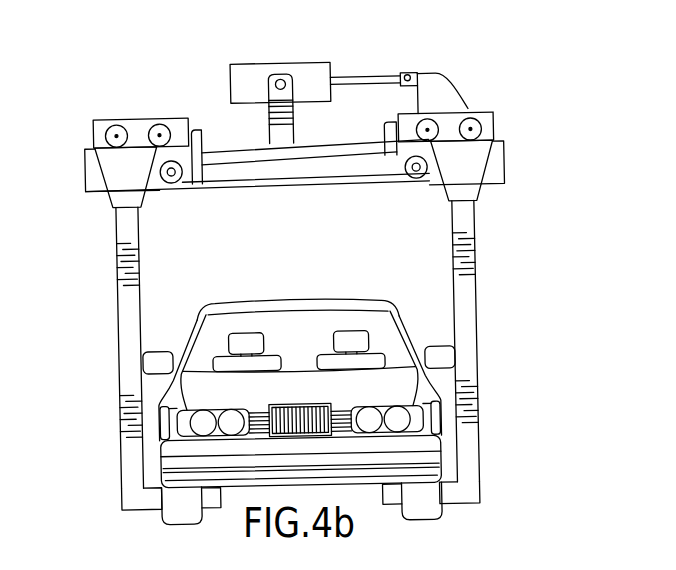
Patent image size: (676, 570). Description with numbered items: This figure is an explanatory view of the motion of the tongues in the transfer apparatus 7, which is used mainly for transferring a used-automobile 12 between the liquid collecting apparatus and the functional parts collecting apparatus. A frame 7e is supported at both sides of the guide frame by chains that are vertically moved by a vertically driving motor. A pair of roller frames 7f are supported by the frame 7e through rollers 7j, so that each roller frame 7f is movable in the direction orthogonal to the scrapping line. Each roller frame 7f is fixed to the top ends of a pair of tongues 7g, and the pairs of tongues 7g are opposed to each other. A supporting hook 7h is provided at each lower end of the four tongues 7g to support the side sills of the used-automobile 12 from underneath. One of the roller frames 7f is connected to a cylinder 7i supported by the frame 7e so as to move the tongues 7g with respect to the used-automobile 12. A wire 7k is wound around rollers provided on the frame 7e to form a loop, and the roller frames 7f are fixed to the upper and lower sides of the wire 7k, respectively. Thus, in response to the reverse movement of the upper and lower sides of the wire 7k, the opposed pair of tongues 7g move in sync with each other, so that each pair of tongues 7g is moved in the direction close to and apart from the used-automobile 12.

The transfer apparatus 7 is at (537, 221).
The frame 7e is at (390, 187).
The roller frame 7f is at (98, 124).
The tongue 7g is at (118, 303).
The supporting hook 7h is at (119, 508).
The cylinder 7i is at (236, 78).
The roller 7j is at (497, 137).
The wire 7k is at (243, 187).
The used-automobile 12 is at (287, 300).